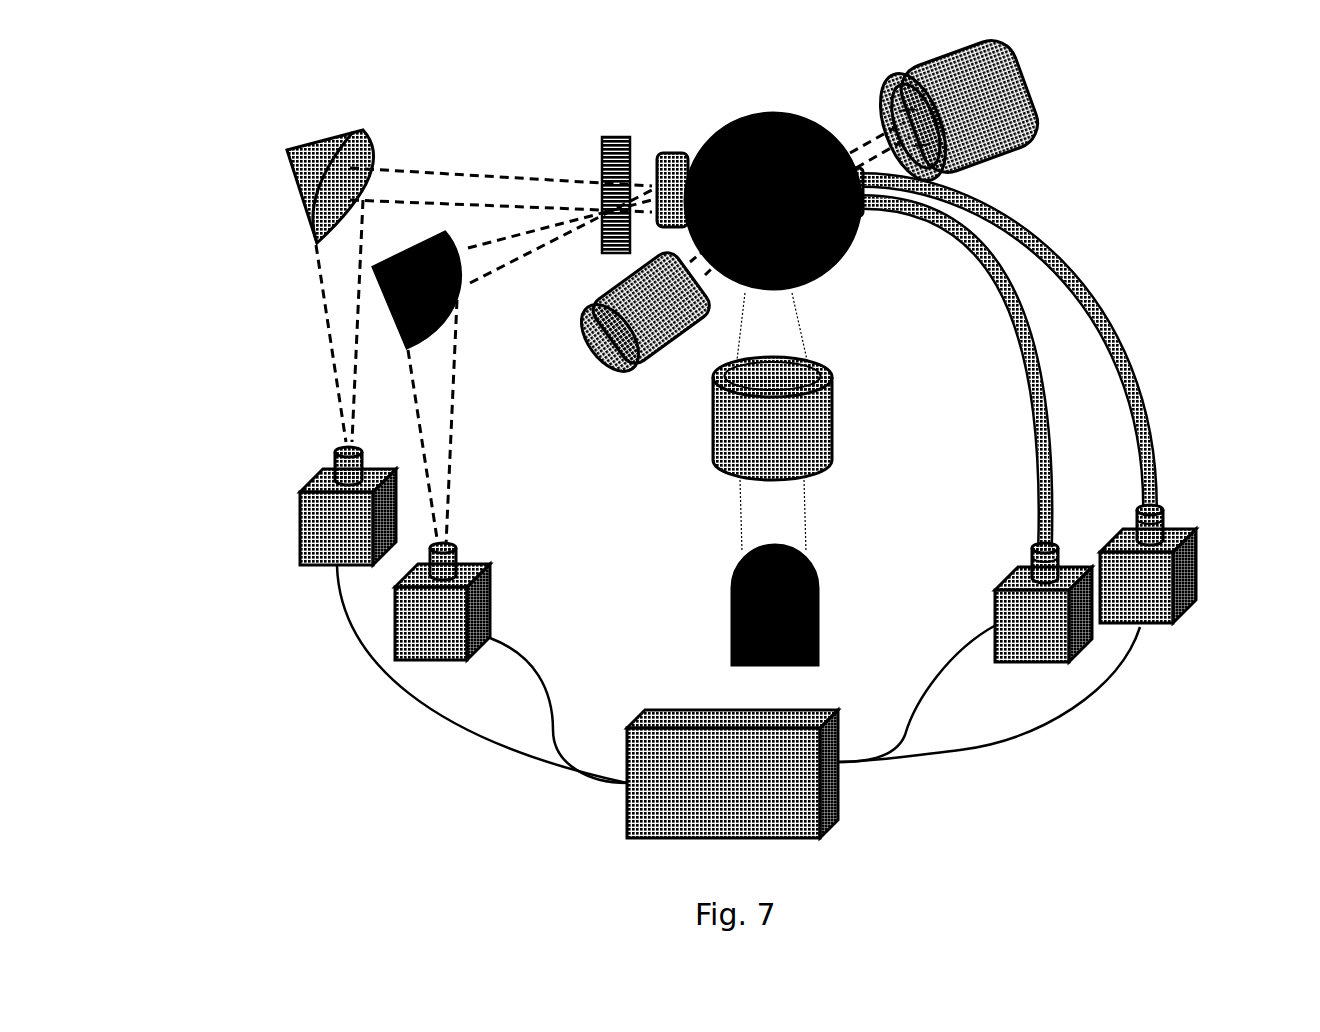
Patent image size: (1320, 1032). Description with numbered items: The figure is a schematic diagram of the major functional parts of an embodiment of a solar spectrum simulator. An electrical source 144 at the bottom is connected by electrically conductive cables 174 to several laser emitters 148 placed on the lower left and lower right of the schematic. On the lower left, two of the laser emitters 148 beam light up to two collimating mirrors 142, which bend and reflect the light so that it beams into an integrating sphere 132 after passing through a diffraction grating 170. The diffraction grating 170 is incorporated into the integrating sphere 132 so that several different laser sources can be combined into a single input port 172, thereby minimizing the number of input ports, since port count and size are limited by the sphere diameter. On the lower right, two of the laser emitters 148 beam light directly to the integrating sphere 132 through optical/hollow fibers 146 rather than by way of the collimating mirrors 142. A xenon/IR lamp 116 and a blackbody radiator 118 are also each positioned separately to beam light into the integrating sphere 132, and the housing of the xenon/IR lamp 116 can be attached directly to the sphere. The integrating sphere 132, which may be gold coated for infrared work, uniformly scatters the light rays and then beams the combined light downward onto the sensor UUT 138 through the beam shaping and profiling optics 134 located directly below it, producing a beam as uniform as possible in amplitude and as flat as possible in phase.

The xenon/IR lamp 116 is at (627, 327).
The blackbody radiator 118 is at (1030, 88).
The integrating sphere 132 is at (765, 113).
The beam shaping and profiling optics 134 is at (832, 418).
The sensor UUT 138 is at (730, 603).
The collimating mirror 142 is at (323, 138).
The electrical source 144 is at (840, 795).
The optical/hollow fiber 146 is at (1108, 320).
The laser emitter 148 is at (300, 528).
The diffraction grating 170 is at (612, 130).
The input port 172 is at (670, 150).
The electrically conductive cable 174 is at (460, 734).